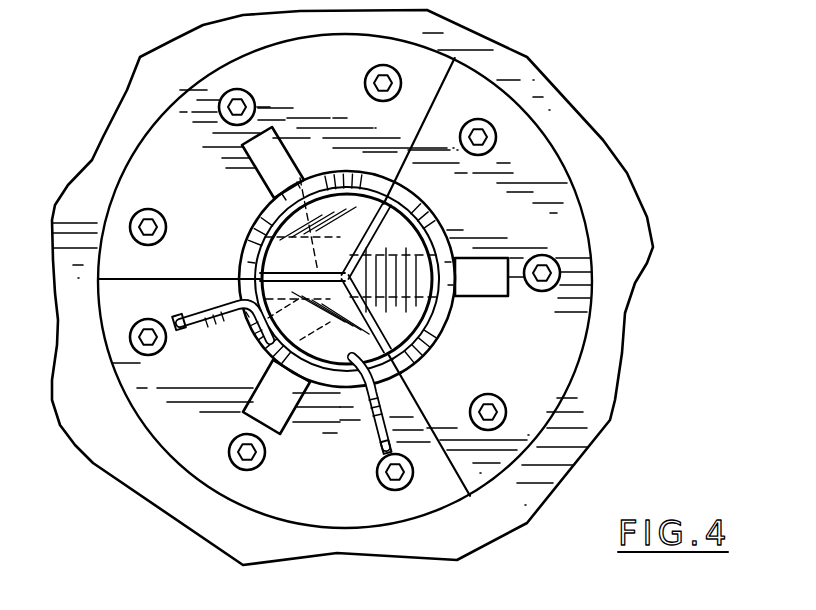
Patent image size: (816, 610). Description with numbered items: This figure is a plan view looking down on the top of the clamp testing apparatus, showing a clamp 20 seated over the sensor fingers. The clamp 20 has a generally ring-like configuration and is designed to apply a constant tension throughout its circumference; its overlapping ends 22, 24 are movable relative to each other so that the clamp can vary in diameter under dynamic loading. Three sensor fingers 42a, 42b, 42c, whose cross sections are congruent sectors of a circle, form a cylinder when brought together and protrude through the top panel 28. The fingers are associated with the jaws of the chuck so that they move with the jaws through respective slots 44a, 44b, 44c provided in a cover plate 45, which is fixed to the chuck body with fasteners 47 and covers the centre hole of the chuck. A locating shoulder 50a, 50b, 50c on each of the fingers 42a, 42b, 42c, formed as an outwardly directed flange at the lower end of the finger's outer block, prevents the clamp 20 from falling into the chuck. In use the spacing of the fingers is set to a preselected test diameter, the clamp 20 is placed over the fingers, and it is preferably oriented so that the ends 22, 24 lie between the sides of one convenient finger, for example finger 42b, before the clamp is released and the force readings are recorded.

The clamp 20 is at (366, 287).
The overlapping end 22 is at (192, 306).
The overlapping end 24 is at (375, 438).
The top panel 28 is at (565, 108).
The sensor finger 42a is at (446, 310).
The sensor finger 42b is at (248, 272).
The sensor finger 42c is at (266, 242).
The slot 44a is at (500, 300).
The slot 44b is at (245, 420).
The slot 44c is at (245, 163).
The cover plate 45 is at (147, 423).
The fastener 47 is at (367, 73).
The locating shoulder 50a is at (440, 336).
The locating shoulder 50b is at (398, 386).
The locating shoulder 50c is at (257, 205).